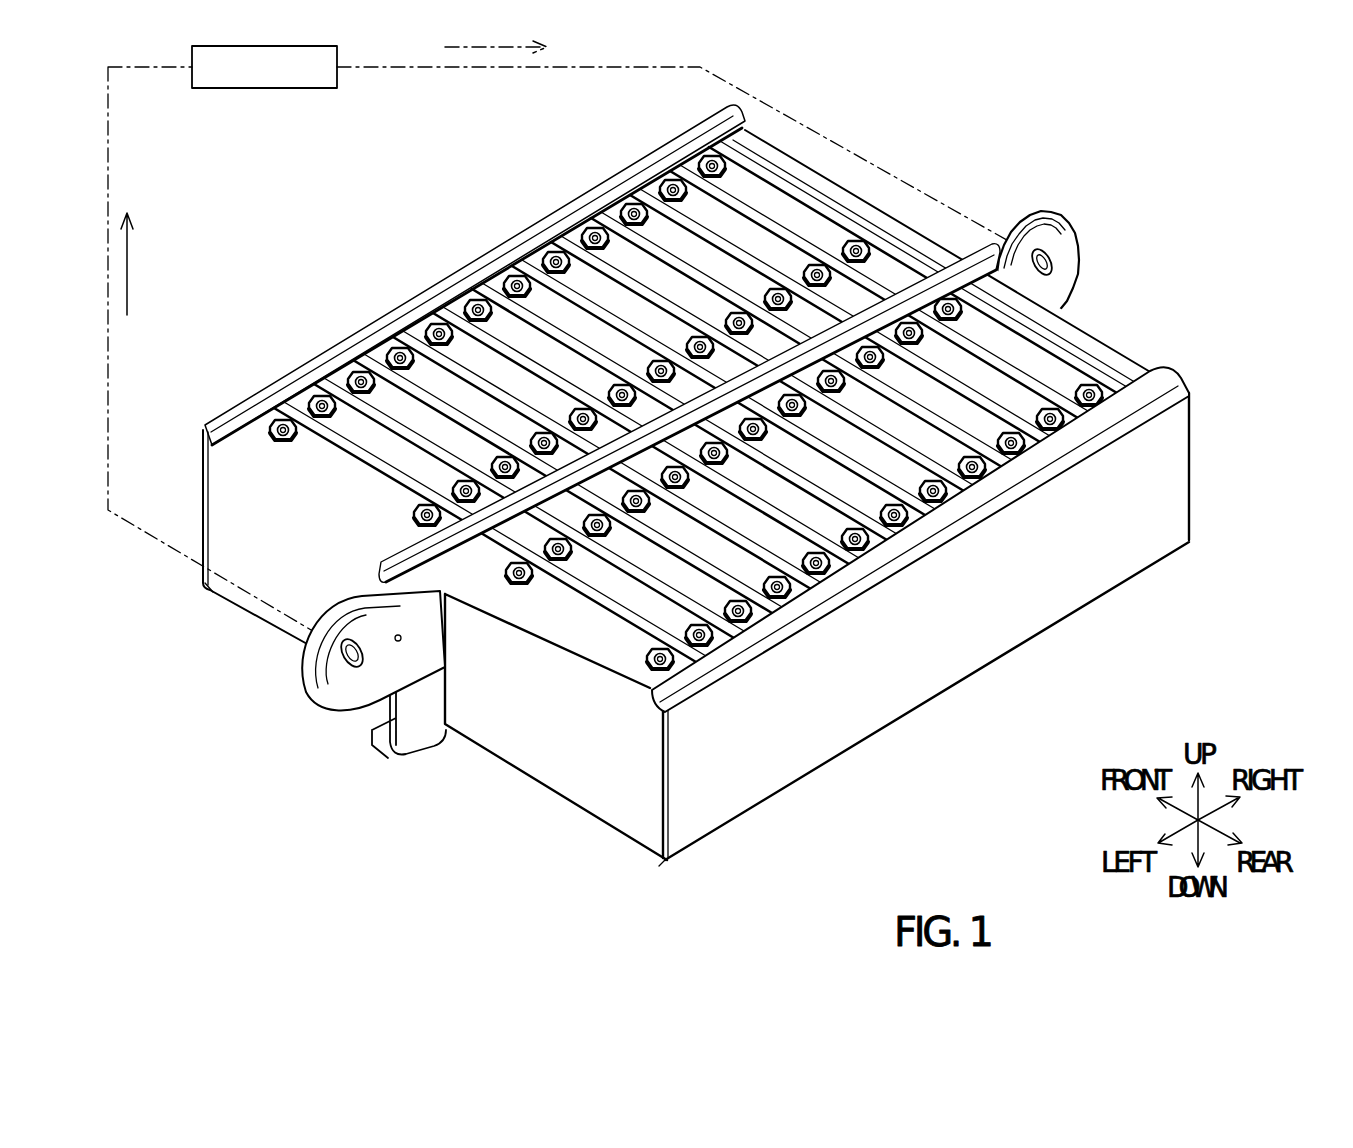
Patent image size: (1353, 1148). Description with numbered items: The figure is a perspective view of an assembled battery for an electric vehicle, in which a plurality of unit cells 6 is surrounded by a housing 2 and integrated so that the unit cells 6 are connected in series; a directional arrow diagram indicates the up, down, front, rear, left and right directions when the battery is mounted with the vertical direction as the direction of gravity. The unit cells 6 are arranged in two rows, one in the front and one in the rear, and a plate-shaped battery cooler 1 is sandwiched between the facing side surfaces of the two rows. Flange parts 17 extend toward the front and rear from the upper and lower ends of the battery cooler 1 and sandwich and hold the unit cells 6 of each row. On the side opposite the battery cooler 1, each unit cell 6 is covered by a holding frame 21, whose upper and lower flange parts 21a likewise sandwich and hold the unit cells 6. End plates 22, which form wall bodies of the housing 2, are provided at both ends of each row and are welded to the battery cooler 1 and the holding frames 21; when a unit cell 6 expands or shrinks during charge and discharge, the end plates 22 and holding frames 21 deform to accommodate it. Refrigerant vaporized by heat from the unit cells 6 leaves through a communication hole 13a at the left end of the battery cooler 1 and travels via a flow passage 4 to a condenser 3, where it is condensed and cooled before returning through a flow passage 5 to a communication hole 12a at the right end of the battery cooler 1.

The battery cooler 1 is at (1108, 197).
The housing 2 is at (1222, 469).
The condenser 3 is at (233, 88).
The flow passage 4 is at (148, 540).
The flow passage 5 is at (818, 128).
The unit cell 6 is at (1040, 362).
The communication hole 12a is at (1040, 258).
The communication hole 13a is at (335, 680).
The flange part 17 is at (948, 228).
The holding frame 21 is at (456, 285).
The flange part 21a is at (335, 358).
The end plate 22 is at (860, 205).